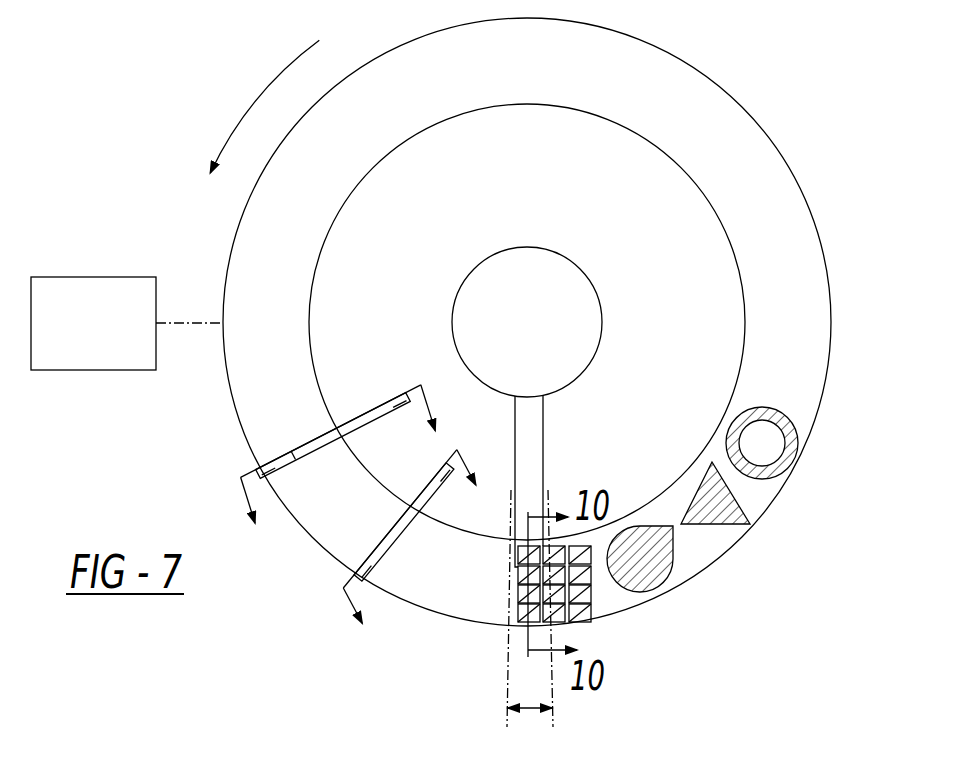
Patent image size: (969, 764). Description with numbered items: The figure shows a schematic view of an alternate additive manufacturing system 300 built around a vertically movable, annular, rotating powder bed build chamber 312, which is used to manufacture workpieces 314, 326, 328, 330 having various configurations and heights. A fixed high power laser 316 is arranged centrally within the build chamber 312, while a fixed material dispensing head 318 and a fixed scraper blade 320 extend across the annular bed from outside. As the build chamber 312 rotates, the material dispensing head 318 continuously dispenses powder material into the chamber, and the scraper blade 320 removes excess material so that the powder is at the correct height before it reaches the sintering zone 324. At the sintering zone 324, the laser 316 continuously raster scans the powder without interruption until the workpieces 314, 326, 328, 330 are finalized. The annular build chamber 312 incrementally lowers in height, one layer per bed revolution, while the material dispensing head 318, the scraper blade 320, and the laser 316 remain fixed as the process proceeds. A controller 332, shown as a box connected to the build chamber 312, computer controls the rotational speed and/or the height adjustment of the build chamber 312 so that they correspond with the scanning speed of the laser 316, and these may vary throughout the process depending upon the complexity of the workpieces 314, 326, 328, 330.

The additive manufacturing system 300 is at (170, 95).
The build chamber 312 is at (665, 93).
The workpiece 314 is at (541, 594).
The laser 316 is at (550, 285).
The material dispensing head 318 is at (288, 453).
The scraper blade 320 is at (390, 547).
The sintering zone 324 is at (530, 620).
The workpiece 326 is at (647, 565).
The workpiece 328 is at (723, 505).
The workpiece 330 is at (788, 438).
The controller 332 is at (105, 277).